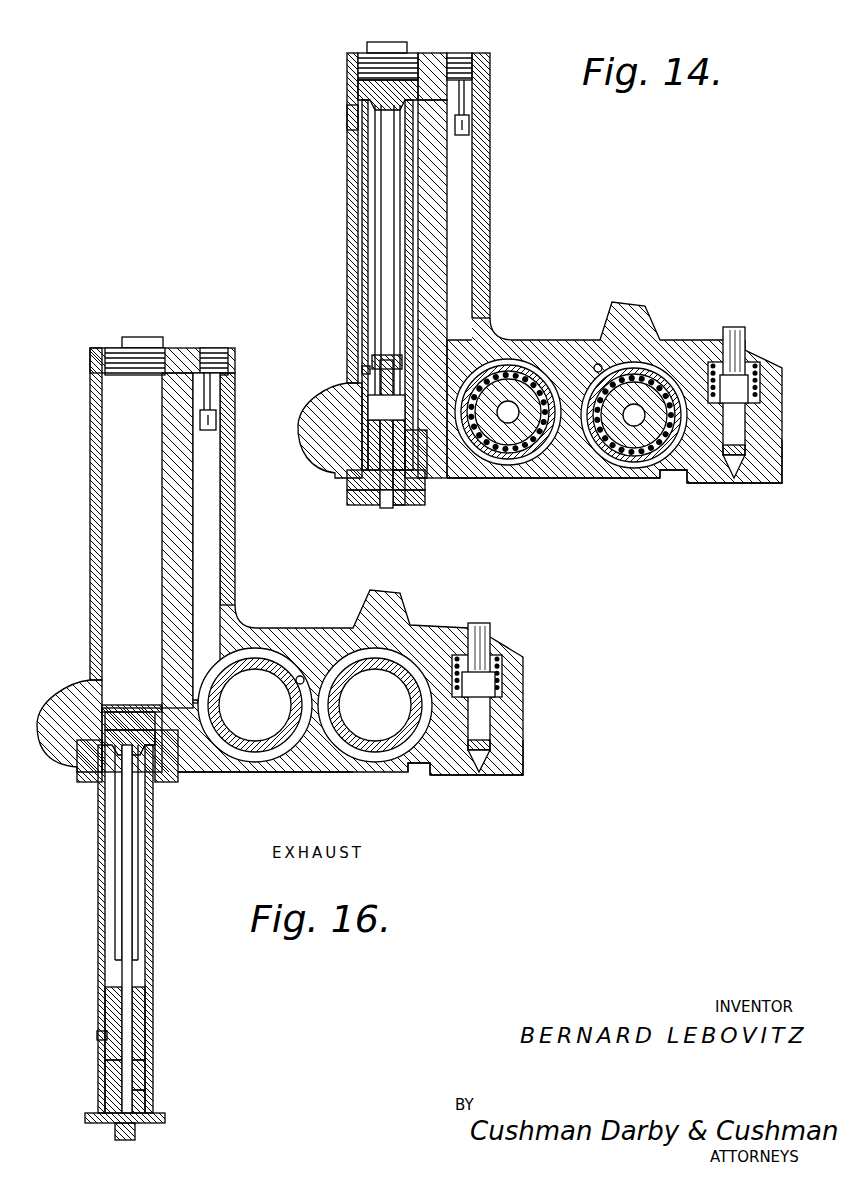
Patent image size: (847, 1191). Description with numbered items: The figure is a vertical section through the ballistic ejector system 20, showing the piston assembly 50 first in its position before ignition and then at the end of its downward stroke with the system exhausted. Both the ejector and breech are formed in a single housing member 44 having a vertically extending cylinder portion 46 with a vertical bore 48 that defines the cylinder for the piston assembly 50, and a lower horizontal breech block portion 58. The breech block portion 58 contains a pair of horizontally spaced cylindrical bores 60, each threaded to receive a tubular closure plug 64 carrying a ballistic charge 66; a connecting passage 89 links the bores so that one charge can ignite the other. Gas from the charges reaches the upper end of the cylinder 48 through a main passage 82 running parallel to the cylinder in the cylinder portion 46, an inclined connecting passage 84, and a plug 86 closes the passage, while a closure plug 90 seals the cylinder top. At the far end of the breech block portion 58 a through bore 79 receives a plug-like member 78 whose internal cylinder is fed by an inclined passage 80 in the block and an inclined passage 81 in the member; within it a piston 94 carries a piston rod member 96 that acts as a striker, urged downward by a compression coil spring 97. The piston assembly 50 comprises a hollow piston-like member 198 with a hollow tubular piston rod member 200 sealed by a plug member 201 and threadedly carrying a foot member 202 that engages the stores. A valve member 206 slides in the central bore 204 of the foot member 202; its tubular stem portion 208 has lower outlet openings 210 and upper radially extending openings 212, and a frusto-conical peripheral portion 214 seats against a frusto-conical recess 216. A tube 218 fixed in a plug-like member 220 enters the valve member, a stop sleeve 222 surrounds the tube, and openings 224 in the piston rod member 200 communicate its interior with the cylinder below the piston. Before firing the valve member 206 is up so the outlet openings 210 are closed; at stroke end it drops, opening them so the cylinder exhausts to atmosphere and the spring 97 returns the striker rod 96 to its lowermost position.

In FIG. 14, the valve assembly 20 is at (540, 484).
In FIG. 16, the valve assembly 20 is at (257, 776).
In FIG. 14, the housing member 44 is at (512, 336).
In FIG. 16, the housing member 44 is at (250, 624).
In FIG. 14, the cylinder portion 46 is at (445, 232).
In FIG. 14, the vertical bore 48 is at (355, 232).
In FIG. 16, the vertical bore 48 is at (95, 571).
In FIG. 14, the piston assembly 50 is at (428, 62).
In FIG. 16, the piston assembly 50 is at (105, 696).
In FIG. 14, the breech block portion 58 is at (585, 348).
In FIG. 16, the breech block portion 58 is at (350, 632).
In FIG. 14, the cylindrical bores 60 is at (602, 378).
In FIG. 16, the cylindrical bores 60 is at (305, 678).
In FIG. 14, the tubular closure plug 64 is at (648, 368).
In FIG. 16, the tubular closure plug 64 is at (288, 697).
In FIG. 14, the ballistic charge 66 is at (517, 437).
In FIG. 14, the plug-like member 78 is at (760, 458).
In FIG. 16, the plug-like member 78 is at (460, 777).
In FIG. 14, the through bore 79 is at (742, 372).
In FIG. 16, the through bore 79 is at (502, 653).
In FIG. 14, the inclined passage 80 is at (670, 480).
In FIG. 16, the inclined passage 80 is at (430, 765).
In FIG. 14, the inclined passage 81 is at (722, 478).
In FIG. 16, the inclined passage 81 is at (488, 774).
In FIG. 14, the main bore or passage 82 is at (478, 165).
In FIG. 16, the main bore or passage 82 is at (222, 558).
In FIG. 14, the inclined connecting passage 84 is at (470, 96).
In FIG. 16, the inclined connecting passage 84 is at (200, 380).
In FIG. 14, the plug 86 is at (468, 62).
In FIG. 16, the plug 86 is at (222, 352).
In FIG. 14, the connecting passage 89 is at (557, 432).
In FIG. 16, the connecting passage 89 is at (317, 774).
In FIG. 14, the closure plug 90 is at (400, 50).
In FIG. 16, the closure plug 90 is at (155, 348).
In FIG. 14, the piston 94 is at (735, 420).
In FIG. 16, the piston 94 is at (492, 726).
In FIG. 14, the piston rod member 96 is at (746, 337).
In FIG. 16, the piston rod member 96 is at (492, 637).
In FIG. 14, the compression coil spring 97 is at (757, 386).
In FIG. 16, the compression coil spring 97 is at (505, 672).
In FIG. 14, the piston-like member 198 is at (362, 108).
In FIG. 16, the piston-like member 198 is at (150, 700).
In FIG. 14, the hollow tubular piston rod member 200 is at (362, 265).
In FIG. 16, the hollow tubular piston rod member 200 is at (98, 890).
In FIG. 14, the plug member 201 is at (387, 410).
In FIG. 16, the plug member 201 is at (175, 786).
In FIG. 14, the foot member 202 is at (362, 506).
In FIG. 16, the foot member 202 is at (152, 1124).
In FIG. 14, the central bore 204 is at (405, 508).
In FIG. 16, the central bore 204 is at (146, 1103).
In FIG. 14, the valve member 206 is at (362, 370).
In FIG. 16, the valve member 206 is at (98, 1035).
In FIG. 14, the tubular stem portion 208 is at (352, 488).
In FIG. 16, the tubular stem portion 208 is at (104, 1095).
In FIG. 14, the outlet openings 210 is at (398, 508).
In FIG. 16, the outlet openings 210 is at (116, 1128).
In FIG. 14, the radially extending openings 212 is at (393, 402).
In FIG. 16, the radially extending openings 212 is at (146, 1068).
In FIG. 14, the frusto-conical peripheral portion 214 is at (368, 392).
In FIG. 16, the frusto-conical peripheral portion 214 is at (146, 1055).
In FIG. 14, the frusto-conical recess 216 is at (368, 425).
In FIG. 16, the frusto-conical recess 216 is at (106, 1057).
In FIG. 14, the tube 218 is at (372, 345).
In FIG. 16, the tube 218 is at (128, 975).
In FIG. 14, the plug-like member 220 is at (365, 88).
In FIG. 16, the plug-like member 220 is at (152, 712).
In FIG. 14, the valve guide or stop sleeve 222 is at (378, 200).
In FIG. 16, the valve guide or stop sleeve 222 is at (118, 830).
In FIG. 14, the radially extending openings 224 is at (350, 120).
In FIG. 16, the radially extending openings 224 is at (100, 755).